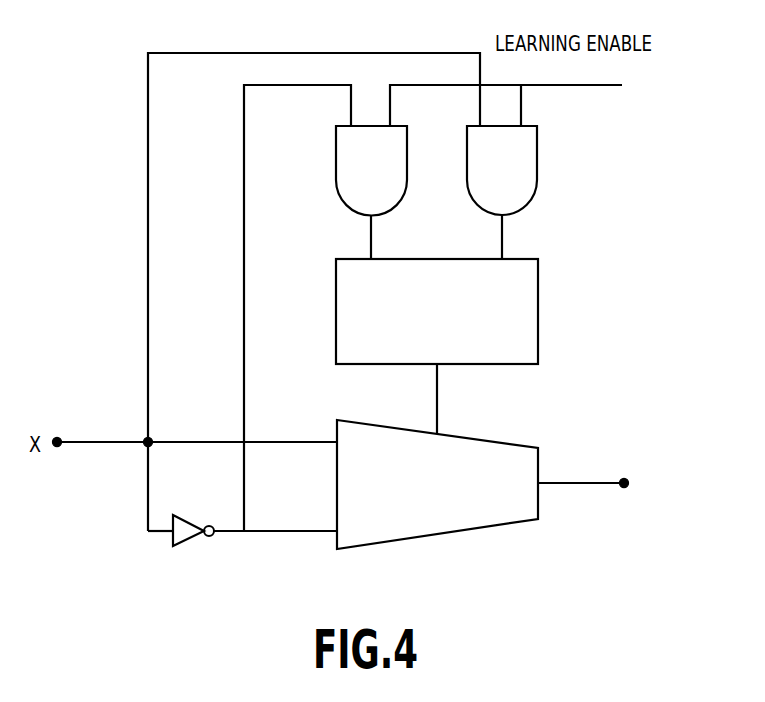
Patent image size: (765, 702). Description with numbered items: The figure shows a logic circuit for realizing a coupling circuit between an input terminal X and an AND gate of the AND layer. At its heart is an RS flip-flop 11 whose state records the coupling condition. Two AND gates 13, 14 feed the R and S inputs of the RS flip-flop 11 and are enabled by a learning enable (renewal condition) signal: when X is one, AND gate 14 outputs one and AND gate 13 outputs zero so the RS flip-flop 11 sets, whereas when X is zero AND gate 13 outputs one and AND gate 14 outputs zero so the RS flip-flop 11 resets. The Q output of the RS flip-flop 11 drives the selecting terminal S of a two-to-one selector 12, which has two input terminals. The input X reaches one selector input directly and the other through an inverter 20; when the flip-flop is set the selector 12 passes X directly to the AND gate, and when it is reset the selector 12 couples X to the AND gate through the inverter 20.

The RS flip-flop 11 is at (538, 320).
The 2-to-1 selector 12 is at (493, 520).
The AND gate 13 is at (346, 189).
The AND gate 14 is at (523, 193).
The inverter 20 is at (183, 536).